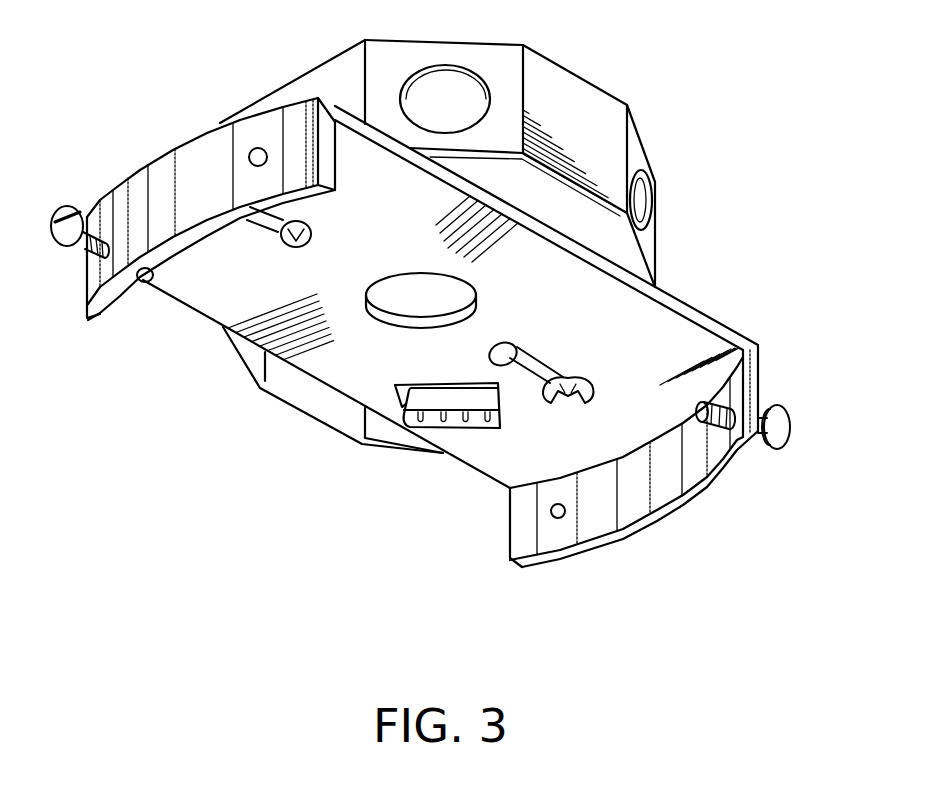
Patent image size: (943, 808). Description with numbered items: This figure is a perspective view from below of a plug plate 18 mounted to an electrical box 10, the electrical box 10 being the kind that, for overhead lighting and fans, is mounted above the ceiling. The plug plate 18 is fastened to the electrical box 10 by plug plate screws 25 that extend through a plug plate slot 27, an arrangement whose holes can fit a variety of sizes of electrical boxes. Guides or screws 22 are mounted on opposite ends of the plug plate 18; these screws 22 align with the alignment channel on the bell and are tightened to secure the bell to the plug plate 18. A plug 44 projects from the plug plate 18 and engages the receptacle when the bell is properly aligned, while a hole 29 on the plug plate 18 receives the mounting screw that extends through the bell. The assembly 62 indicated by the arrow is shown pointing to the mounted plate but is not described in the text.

The housing box 10 is at (582, 107).
The mounting plate surface 18 is at (404, 232).
The screws 22 is at (57, 237).
The clip 25 is at (575, 388).
The tool handle 27 is at (514, 351).
The hole 29 is at (562, 517).
The bracket 44 is at (475, 397).
The mounting plate assembly 62 is at (712, 310).